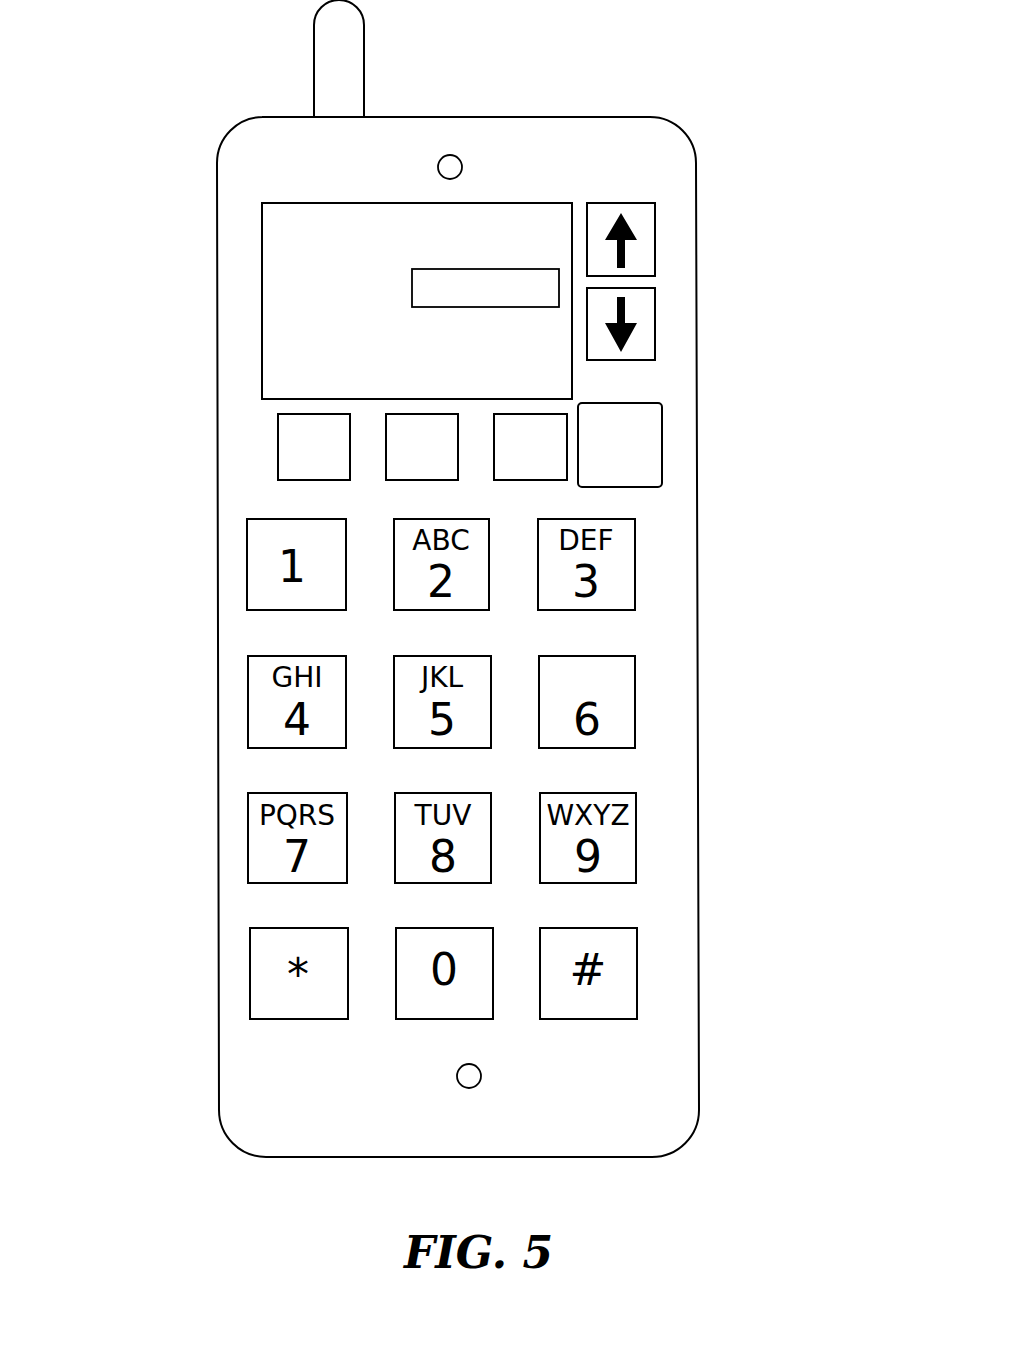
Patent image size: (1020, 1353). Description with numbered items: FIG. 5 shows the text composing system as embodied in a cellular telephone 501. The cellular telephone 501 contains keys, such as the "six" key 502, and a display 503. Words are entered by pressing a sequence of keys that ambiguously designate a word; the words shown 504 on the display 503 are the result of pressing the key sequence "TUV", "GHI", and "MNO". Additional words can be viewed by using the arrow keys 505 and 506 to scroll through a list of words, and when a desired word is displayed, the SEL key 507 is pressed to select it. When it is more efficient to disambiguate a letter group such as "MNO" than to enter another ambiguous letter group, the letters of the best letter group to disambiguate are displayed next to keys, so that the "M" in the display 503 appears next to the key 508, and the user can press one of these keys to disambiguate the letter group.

The cellular telephone 501 is at (702, 882).
The "6" key 502 is at (635, 698).
The display 503 is at (260, 263).
The words shown 504 is at (487, 243).
The arrow key 505 is at (655, 243).
The arrow key 506 is at (655, 337).
The SEL key 507 is at (662, 447).
The key 508 is at (278, 465).